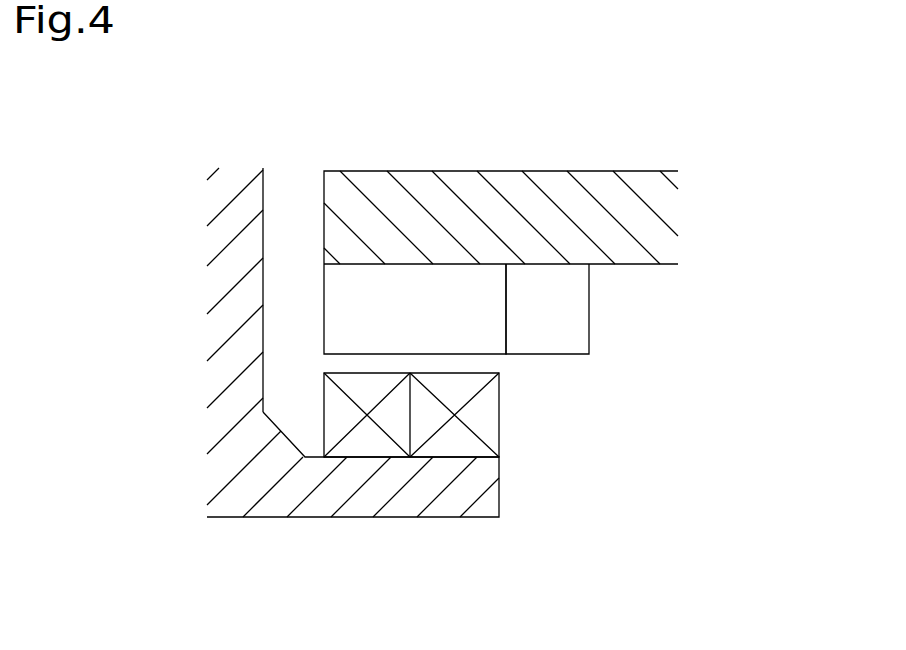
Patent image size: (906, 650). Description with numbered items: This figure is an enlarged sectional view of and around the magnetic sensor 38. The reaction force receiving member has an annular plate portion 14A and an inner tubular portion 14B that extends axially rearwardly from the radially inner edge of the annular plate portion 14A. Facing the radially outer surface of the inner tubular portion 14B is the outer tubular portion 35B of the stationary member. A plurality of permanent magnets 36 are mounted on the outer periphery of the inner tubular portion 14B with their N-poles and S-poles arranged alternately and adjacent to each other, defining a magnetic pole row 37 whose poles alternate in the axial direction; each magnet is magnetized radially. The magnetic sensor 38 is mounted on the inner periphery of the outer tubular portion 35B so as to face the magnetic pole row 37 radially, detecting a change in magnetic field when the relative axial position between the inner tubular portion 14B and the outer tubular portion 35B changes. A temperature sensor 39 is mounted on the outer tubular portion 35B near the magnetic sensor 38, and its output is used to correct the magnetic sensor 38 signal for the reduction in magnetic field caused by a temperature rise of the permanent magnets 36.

The annular plate portion 14A is at (223, 230).
The inner tubular portion 14B is at (482, 508).
The outer tubular portion 35B is at (665, 210).
The permanent magnets 36 is at (375, 448).
The magnetic pole row 37 is at (500, 418).
The magnetic sensor 38 is at (429, 285).
The temperature sensor 39 is at (548, 277).